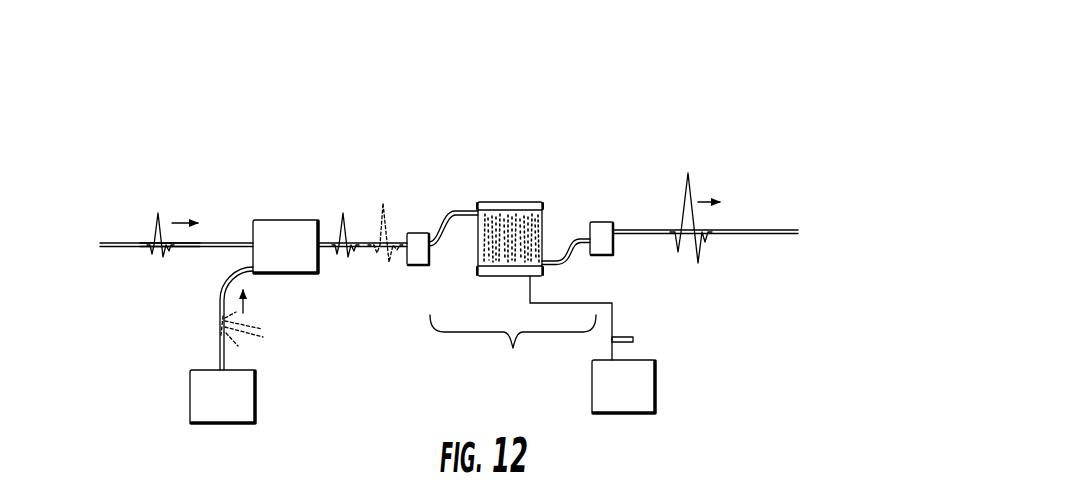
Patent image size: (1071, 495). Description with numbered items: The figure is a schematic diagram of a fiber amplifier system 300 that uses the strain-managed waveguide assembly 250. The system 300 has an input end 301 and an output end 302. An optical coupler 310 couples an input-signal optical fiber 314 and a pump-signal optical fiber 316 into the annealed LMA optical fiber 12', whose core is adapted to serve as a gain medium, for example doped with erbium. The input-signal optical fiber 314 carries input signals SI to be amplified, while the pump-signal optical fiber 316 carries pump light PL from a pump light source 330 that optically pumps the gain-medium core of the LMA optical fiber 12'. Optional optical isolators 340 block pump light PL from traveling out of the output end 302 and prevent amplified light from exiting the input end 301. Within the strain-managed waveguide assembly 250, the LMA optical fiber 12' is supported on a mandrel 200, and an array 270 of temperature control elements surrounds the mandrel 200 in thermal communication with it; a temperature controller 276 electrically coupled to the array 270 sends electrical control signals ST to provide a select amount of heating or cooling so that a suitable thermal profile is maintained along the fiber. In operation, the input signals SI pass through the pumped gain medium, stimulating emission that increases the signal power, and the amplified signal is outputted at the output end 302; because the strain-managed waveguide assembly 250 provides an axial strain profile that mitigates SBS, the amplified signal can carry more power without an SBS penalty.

The fiber amplifier system 300 is at (667, 76).
The input end 301 is at (107, 256).
The output end 302 is at (787, 245).
The optical coupler 310 is at (297, 258).
The input-signal optical fiber 314 is at (197, 248).
The pump-signal optical fiber 316 is at (220, 346).
The pump light source 330 is at (237, 406).
The optical isolators 340 is at (420, 267).
The annealed LMA optical fiber 12' is at (453, 263).
The strain-managed waveguide assembly 250 is at (593, 160).
The mandrel 200 is at (543, 220).
The array of temperature control elements 270 is at (500, 196).
The temperature controller 276 is at (637, 397).
The input signals SI is at (344, 217).
The pump light PL is at (382, 203).
The electrical control signals ST is at (635, 340).